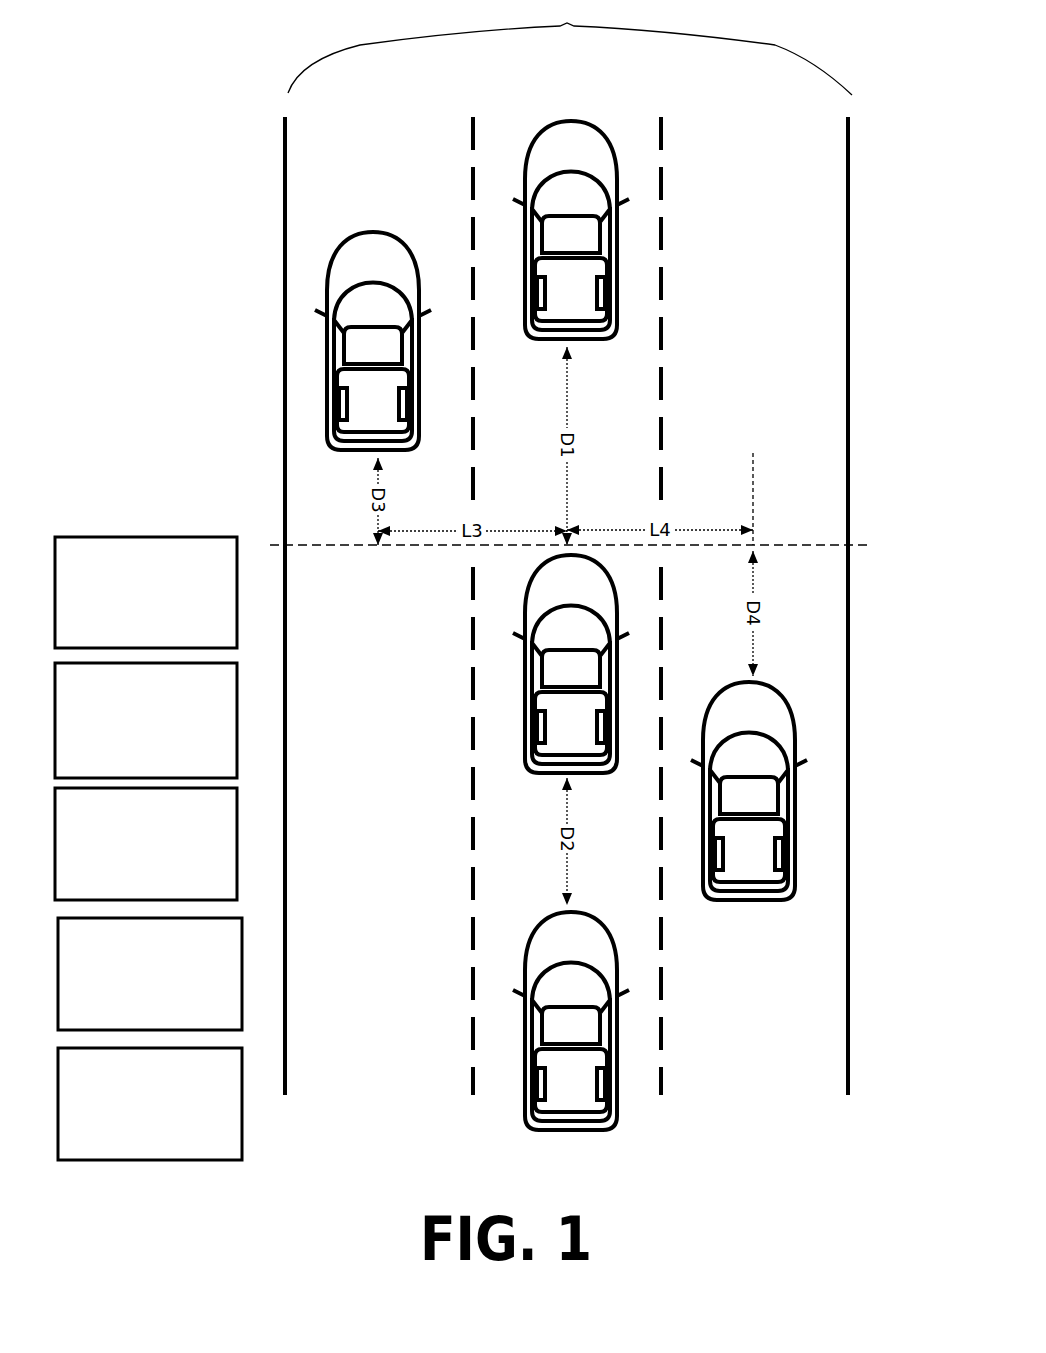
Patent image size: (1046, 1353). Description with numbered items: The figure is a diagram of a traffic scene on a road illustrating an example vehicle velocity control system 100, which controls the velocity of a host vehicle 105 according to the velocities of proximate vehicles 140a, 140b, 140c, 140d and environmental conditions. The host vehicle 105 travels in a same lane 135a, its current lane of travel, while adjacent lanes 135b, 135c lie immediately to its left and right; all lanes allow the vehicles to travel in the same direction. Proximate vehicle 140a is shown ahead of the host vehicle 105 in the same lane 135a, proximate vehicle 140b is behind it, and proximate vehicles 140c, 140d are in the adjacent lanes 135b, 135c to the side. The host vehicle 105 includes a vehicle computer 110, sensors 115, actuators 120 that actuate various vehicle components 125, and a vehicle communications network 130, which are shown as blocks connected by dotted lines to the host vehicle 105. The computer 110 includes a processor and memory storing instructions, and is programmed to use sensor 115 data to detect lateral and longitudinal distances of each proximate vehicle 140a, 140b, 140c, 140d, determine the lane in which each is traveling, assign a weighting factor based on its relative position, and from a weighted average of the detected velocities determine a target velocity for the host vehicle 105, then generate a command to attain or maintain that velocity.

The vehicle velocity control system 100 is at (168, 83).
The host vehicle 105 is at (598, 770).
The vehicle computer 110 is at (509, 645).
The sensors 115 is at (509, 672).
The actuators 120 is at (509, 695).
The vehicle components 125 is at (509, 718).
The vehicle communications network 130 is at (509, 741).
The same lane 135a is at (510, 1072).
The adjacent lane 135b is at (397, 1075).
The adjacent lane 135c is at (722, 1080).
The proximate vehicle 140a is at (598, 133).
The proximate vehicle 140b is at (595, 1122).
The proximate vehicle 140c is at (390, 238).
The proximate vehicle 140d is at (773, 897).